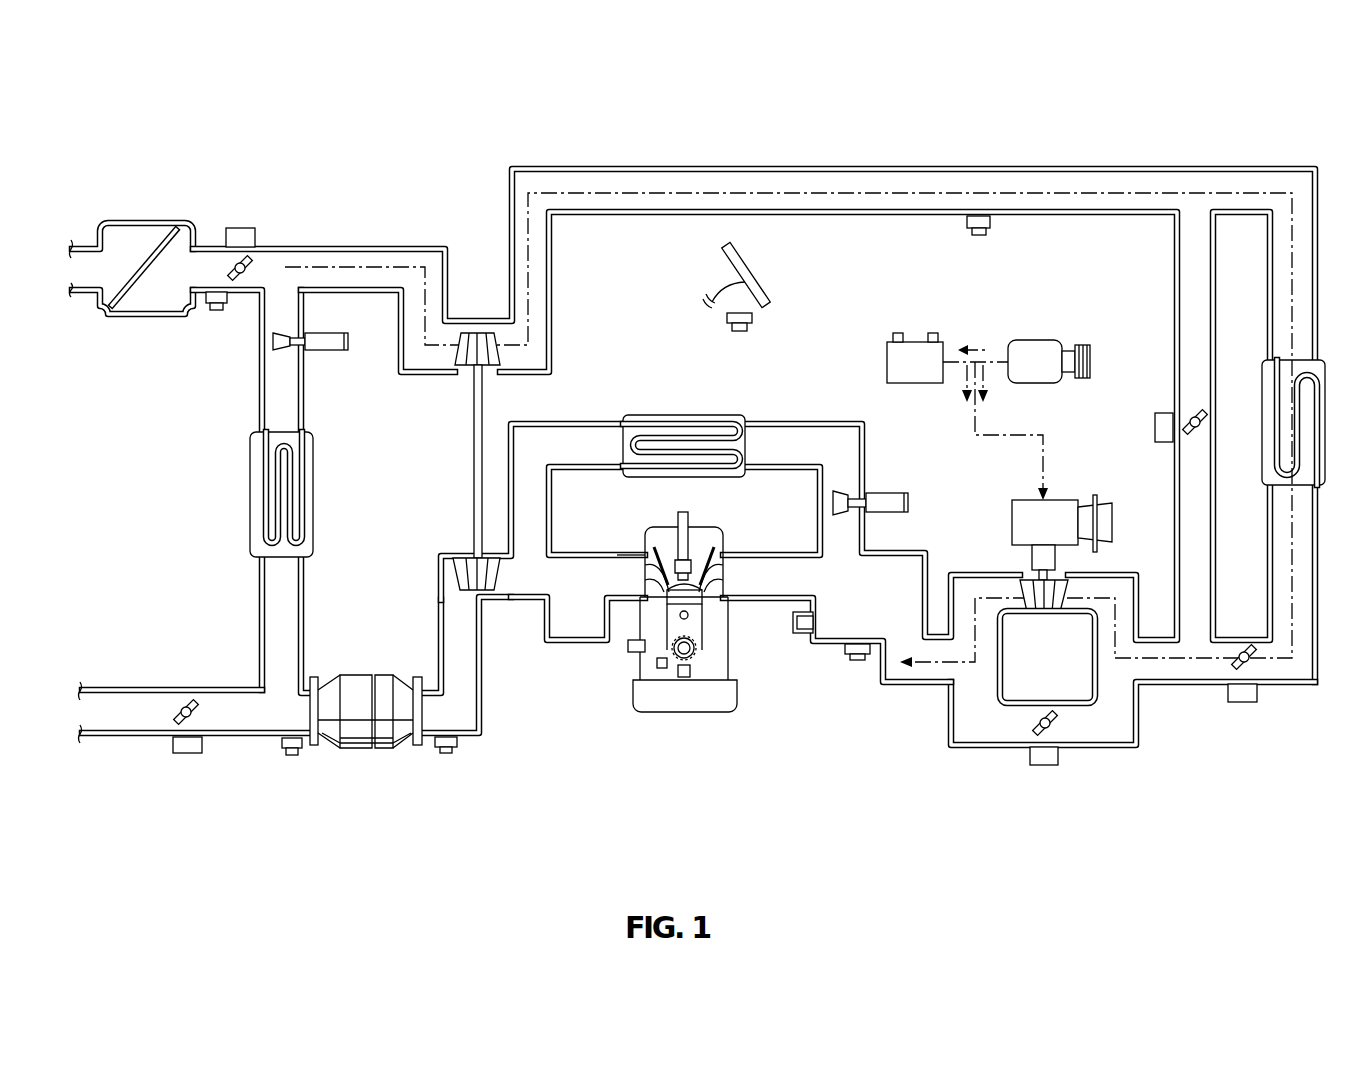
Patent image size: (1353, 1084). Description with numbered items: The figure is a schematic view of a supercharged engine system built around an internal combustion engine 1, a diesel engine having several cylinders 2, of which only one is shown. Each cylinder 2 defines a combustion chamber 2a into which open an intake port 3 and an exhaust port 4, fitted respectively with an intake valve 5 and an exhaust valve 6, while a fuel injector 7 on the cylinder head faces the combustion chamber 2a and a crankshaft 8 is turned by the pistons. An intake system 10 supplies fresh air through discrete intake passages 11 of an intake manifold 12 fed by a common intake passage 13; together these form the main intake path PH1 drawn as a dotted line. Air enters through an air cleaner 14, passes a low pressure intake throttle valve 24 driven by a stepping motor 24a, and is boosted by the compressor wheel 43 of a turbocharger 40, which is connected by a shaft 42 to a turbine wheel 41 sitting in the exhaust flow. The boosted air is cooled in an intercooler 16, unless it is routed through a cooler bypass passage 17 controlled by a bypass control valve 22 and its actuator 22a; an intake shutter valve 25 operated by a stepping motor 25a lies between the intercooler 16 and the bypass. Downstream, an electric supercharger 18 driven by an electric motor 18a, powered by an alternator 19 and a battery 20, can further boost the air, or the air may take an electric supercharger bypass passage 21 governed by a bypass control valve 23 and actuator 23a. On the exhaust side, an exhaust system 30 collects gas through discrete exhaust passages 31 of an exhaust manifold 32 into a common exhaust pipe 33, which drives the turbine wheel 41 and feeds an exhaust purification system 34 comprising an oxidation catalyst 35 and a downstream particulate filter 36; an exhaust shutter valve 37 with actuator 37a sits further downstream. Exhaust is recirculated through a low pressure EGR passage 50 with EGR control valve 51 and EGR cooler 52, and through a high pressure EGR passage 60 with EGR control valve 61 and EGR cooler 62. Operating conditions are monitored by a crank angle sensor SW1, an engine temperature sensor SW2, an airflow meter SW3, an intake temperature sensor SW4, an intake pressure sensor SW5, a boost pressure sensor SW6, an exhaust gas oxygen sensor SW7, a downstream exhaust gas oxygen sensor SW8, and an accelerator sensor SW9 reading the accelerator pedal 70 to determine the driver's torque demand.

The internal combustion engine 1 is at (725, 723).
The cylinder 2 is at (675, 598).
The combustion chamber 2a is at (690, 612).
The intake port 3 is at (722, 575).
The exhaust port 4 is at (650, 572).
The intake valve 5 is at (705, 550).
The exhaust valve 6 is at (660, 550).
The fuel injector 7 is at (675, 540).
The crankshaft 8 is at (698, 648).
The intake system 10 is at (485, 188).
The discrete intake passage 11 is at (768, 552).
The intake manifold 12 is at (812, 635).
The common intake passage 13 is at (941, 167).
The air cleaner 14 is at (172, 228).
The intercooler 16 is at (1265, 375).
The cooler bypass passage 17 is at (1173, 265).
The electric supercharger 18 is at (1112, 520).
The electric motor 18a is at (1012, 520).
The alternator 19 is at (1045, 340).
The battery 20 is at (918, 342).
The electric supercharger bypass passage 21 is at (1140, 714).
The bypass control valve 22 is at (1190, 415).
The actuator 22a is at (1155, 425).
The bypass control valve 23 is at (1040, 712).
The actuator 23a is at (1047, 767).
The low pressure intake throttle valve 24 is at (255, 260).
The stepping motor 24a is at (242, 228).
The intake shutter valve 25 is at (1243, 645).
The stepping motor 25a is at (1247, 703).
The exhaust system 30 is at (213, 670).
The discrete exhaust passage 31 is at (619, 552).
The exhaust manifold 32 is at (548, 642).
The common exhaust pipe 33 is at (483, 705).
The exhaust purification system 34 is at (418, 788).
The oxidation catalyst 35 is at (385, 685).
The particulate filter 36 is at (352, 685).
The exhaust shutter valve 37 is at (185, 700).
The actuator 37a is at (190, 755).
The turbocharger 40 is at (461, 464).
The turbine wheel 41 is at (463, 575).
The shaft 42 is at (476, 505).
The compressor wheel 43 is at (505, 348).
The low pressure EGR passage 50 is at (258, 600).
The EGR control valve 51 is at (325, 348).
The EGR cooler 52 is at (250, 490).
The high pressure EGR passage 60 is at (562, 424).
The EGR control valve 61 is at (887, 510).
The EGR cooler 62 is at (700, 416).
The accelerator pedal 70 is at (754, 283).
The main intake path PH1 is at (1095, 193).
The crank angle sensor SW1 is at (684, 679).
The engine temperature sensor SW2 is at (630, 650).
The airflow meter SW3 is at (216, 312).
The intake temperature sensor SW4 is at (811, 622).
The intake pressure sensor SW5 is at (858, 662).
The boost pressure sensor SW6 is at (977, 237).
The exhaust gas oxygen sensor SW7 is at (450, 755).
The downstream exhaust gas oxygen sensor SW8 is at (296, 757).
The accelerator sensor SW9 is at (752, 325).